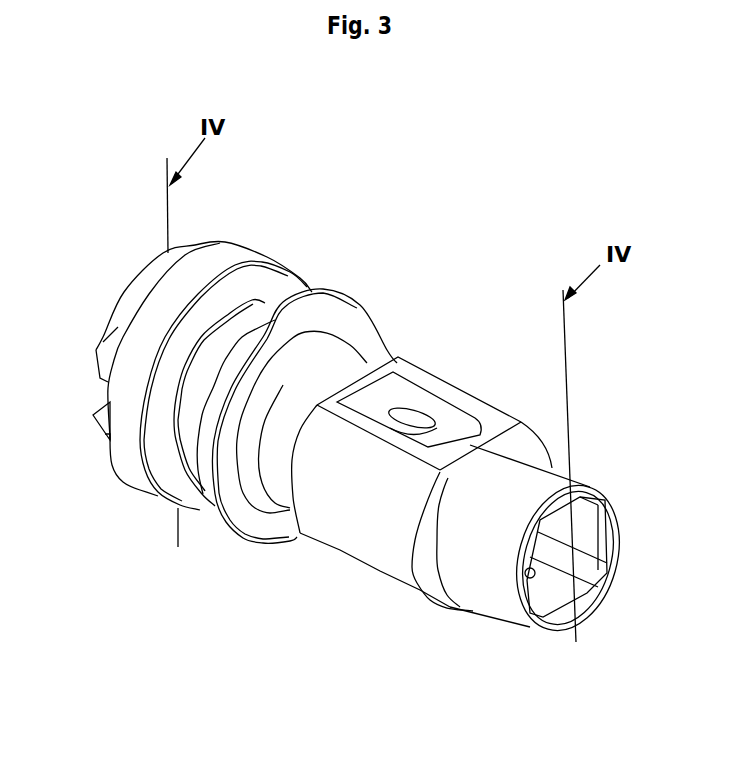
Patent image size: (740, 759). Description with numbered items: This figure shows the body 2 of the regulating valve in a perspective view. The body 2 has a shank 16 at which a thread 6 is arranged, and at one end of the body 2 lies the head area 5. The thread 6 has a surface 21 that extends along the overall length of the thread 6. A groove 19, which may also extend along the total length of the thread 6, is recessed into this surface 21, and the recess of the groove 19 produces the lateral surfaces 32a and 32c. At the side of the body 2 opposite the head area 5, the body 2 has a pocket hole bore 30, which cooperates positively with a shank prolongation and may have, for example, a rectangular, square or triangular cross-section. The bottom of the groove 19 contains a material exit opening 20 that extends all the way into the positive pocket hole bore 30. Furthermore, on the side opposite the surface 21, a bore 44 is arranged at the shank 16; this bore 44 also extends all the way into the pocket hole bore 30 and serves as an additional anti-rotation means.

The body 2 is at (343, 245).
The head area 5 is at (97, 355).
The thread 6 is at (370, 520).
The shank 16 is at (493, 565).
The groove 19 is at (386, 397).
The material exit opening 20 is at (413, 428).
The surface 21 is at (445, 455).
The pocket hole bore 30 is at (577, 523).
The lateral surface 32a is at (425, 450).
The lateral surface 32c is at (395, 358).
The bore 44 is at (533, 580).